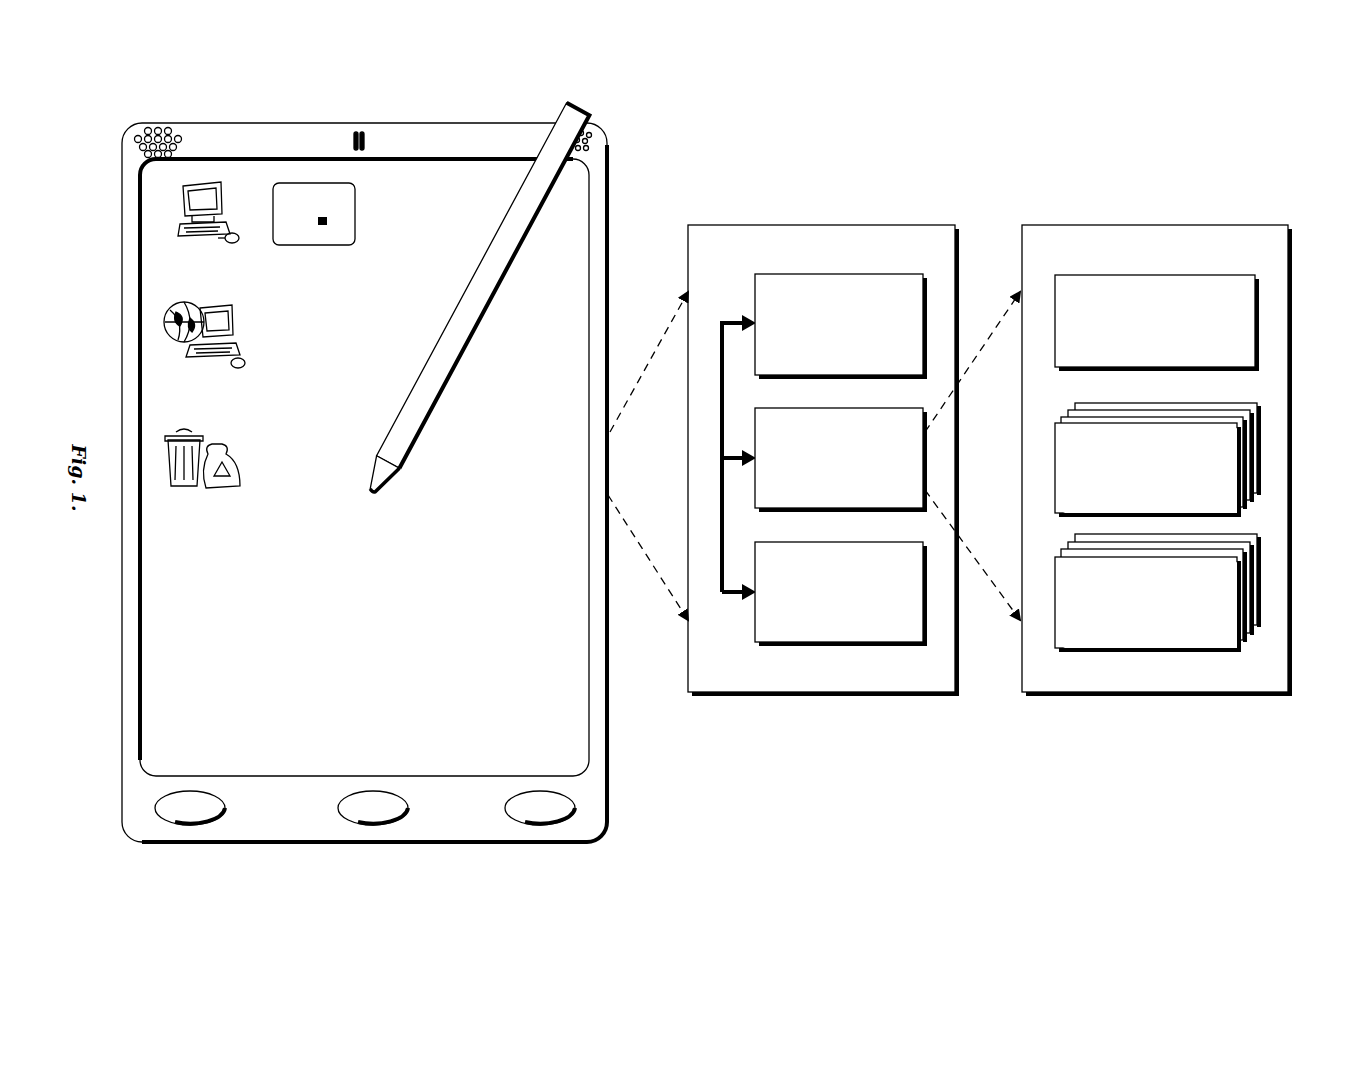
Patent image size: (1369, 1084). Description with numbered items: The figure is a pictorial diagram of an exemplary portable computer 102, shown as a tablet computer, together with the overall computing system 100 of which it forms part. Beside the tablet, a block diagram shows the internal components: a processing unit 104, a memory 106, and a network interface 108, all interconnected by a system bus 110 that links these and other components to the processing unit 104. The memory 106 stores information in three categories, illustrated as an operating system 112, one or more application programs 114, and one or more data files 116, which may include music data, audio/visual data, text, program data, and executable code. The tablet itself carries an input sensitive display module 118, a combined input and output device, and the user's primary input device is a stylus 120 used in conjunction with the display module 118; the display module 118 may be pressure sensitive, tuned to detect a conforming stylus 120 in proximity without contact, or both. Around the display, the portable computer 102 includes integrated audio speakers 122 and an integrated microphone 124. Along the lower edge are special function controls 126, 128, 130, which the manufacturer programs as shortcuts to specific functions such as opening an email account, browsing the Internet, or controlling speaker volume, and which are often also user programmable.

The pen-based computing system 100 is at (962, 169).
The portable computer 102 is at (608, 150).
The processing unit 104 is at (905, 290).
The memory 106 is at (905, 455).
The network interface 108 is at (905, 623).
The system bus 110 is at (720, 425).
The operating system 112 is at (1237, 303).
The application programs 114 is at (1222, 440).
The data files 116 is at (1220, 575).
The input sensitive display module 118 is at (573, 207).
The stylus 120 is at (530, 228).
The audio speakers 122 is at (630, 115).
The microphone 124 is at (368, 130).
The special function control 126 is at (192, 825).
The special function control 128 is at (375, 825).
The special function control 130 is at (542, 825).